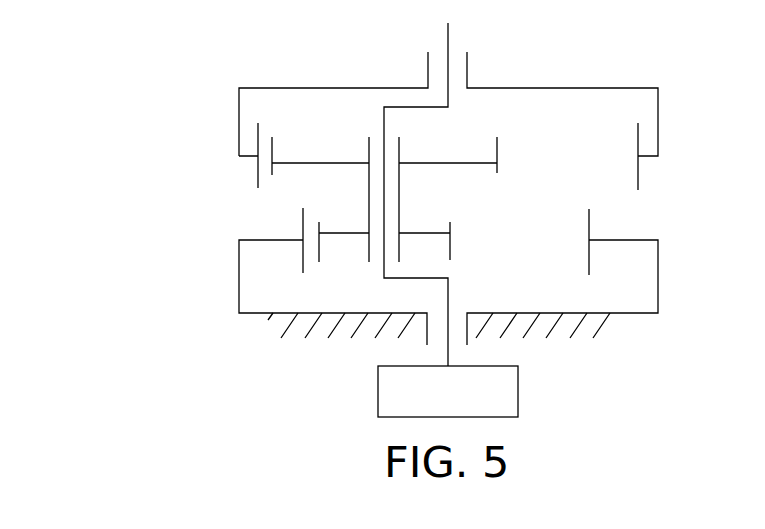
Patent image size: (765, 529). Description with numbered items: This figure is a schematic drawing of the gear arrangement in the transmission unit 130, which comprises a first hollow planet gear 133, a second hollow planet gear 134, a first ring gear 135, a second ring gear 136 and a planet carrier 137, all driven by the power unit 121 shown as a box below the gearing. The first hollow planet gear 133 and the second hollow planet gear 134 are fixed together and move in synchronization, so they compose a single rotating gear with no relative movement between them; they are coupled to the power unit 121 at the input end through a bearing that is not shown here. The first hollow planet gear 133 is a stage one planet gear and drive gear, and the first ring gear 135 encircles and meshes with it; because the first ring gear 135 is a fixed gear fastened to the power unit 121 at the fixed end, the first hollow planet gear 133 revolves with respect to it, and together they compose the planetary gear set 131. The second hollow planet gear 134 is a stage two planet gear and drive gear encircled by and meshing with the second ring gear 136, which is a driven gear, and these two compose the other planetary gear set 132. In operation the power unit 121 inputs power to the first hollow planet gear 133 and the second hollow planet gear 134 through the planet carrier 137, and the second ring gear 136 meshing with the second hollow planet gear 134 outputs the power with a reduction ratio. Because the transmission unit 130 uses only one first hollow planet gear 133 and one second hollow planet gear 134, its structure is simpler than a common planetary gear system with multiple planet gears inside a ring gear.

The power unit 121 is at (518, 390).
The transmission unit 130 is at (89, 140).
The planetary gear set 131 is at (134, 207).
The planetary gear set 132 is at (134, 115).
The first hollow planet gear 133 is at (343, 233).
The second hollow planet gear 134 is at (323, 163).
The first ring gear 135 is at (240, 277).
The second ring gear 136 is at (240, 123).
The planet carrier 137 is at (383, 267).